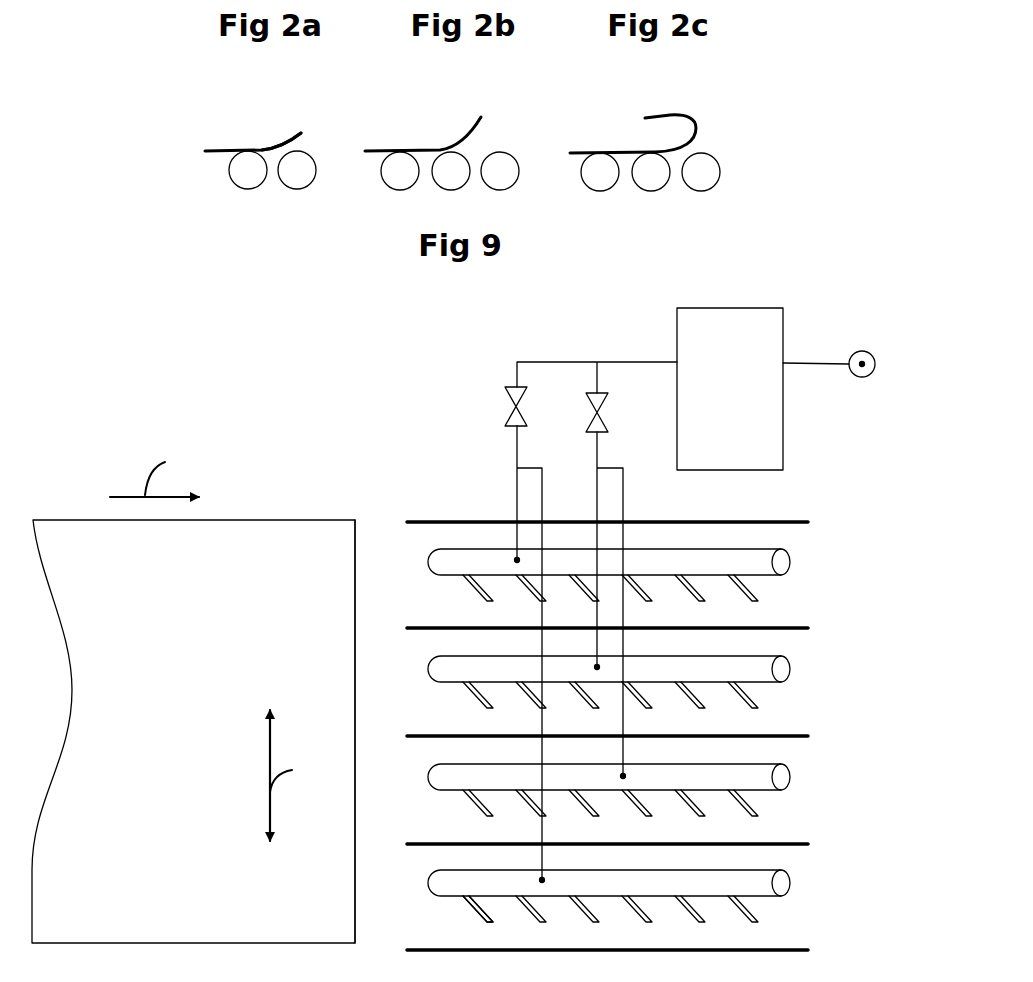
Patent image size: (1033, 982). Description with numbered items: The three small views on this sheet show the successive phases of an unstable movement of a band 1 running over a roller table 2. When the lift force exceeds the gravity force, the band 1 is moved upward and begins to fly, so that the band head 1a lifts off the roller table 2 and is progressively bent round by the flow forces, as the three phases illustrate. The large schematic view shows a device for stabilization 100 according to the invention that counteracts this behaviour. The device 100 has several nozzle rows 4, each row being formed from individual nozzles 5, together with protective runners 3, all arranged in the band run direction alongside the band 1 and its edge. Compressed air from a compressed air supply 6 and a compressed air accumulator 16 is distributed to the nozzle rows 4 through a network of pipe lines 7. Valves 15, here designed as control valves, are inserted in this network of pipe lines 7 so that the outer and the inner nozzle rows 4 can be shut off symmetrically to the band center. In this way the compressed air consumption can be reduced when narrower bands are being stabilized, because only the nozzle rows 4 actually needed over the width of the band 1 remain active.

In FIG. 2A, the band 1 is at (223, 148).
In FIG. 2B, the band 1 is at (459, 140).
In FIG. 2C, the band 1 is at (697, 121).
In FIG. 9, the band 1 is at (194, 744).
In FIG. 2A, the band head 1a is at (283, 130).
In FIG. 9, the band head 1a is at (369, 537).
In FIG. 2A, the roller table 2 is at (266, 206).
In FIG. 2B, the roller table 2 is at (446, 198).
In FIG. 2C, the roller table 2 is at (649, 201).
In FIG. 9, the protective runner 3 is at (780, 942).
In FIG. 9, the nozzle row 4 is at (439, 559).
In FIG. 9, the nozzle 5 is at (474, 908).
In FIG. 9, the compressed air supply 6 is at (863, 347).
In FIG. 9, the network of pipe lines 7 is at (493, 480).
In FIG. 9, the valve 15 is at (501, 418).
In FIG. 9, the compressed air accumulator 16 is at (732, 412).
In FIG. 9, the device for stabilization 100 is at (356, 393).